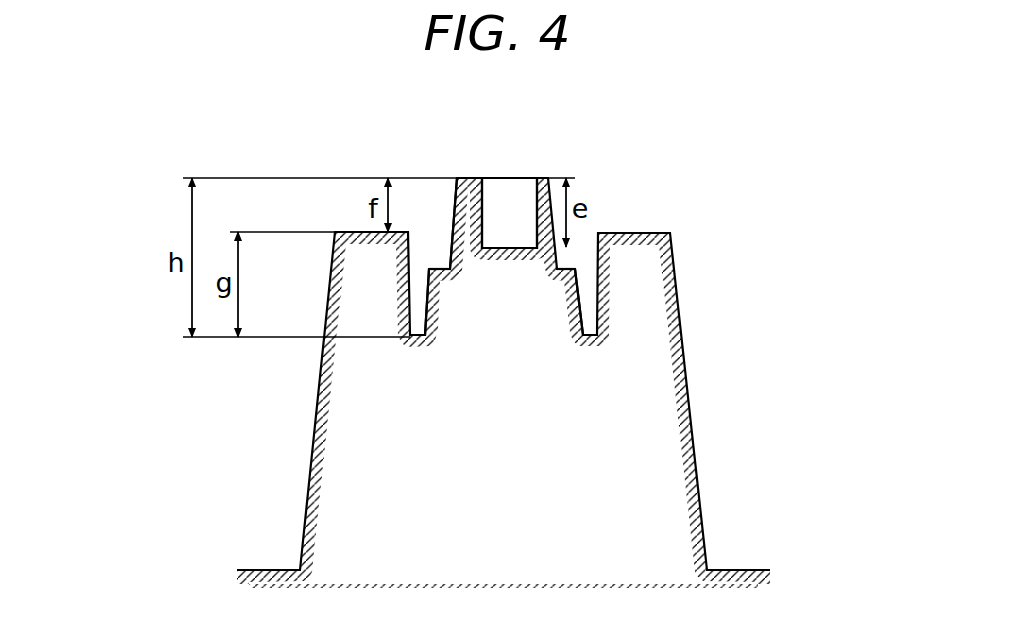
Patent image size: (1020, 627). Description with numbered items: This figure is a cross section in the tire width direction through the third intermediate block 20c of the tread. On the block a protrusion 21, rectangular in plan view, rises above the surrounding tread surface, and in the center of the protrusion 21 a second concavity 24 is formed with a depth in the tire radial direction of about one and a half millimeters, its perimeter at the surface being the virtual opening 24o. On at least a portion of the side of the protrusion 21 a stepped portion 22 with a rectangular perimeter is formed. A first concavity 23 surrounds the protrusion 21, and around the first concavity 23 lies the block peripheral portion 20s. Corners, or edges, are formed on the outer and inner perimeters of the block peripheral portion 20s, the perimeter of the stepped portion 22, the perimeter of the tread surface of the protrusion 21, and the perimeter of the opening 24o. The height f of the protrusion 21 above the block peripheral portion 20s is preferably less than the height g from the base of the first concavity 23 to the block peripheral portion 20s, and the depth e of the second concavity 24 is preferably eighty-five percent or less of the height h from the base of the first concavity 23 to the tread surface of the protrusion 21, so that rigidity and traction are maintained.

The third intermediate block 20c is at (722, 268).
The block peripheral portion 20s is at (372, 250).
The protrusion 21 is at (466, 182).
The stepped portion 22 is at (440, 268).
The first concavity 23 is at (424, 298).
The second concavity 24 is at (527, 180).
The opening of the second concavity 24o is at (497, 180).